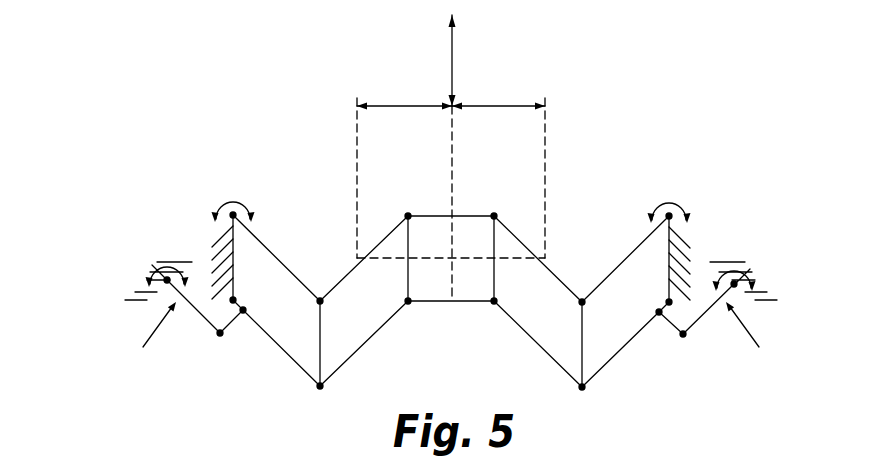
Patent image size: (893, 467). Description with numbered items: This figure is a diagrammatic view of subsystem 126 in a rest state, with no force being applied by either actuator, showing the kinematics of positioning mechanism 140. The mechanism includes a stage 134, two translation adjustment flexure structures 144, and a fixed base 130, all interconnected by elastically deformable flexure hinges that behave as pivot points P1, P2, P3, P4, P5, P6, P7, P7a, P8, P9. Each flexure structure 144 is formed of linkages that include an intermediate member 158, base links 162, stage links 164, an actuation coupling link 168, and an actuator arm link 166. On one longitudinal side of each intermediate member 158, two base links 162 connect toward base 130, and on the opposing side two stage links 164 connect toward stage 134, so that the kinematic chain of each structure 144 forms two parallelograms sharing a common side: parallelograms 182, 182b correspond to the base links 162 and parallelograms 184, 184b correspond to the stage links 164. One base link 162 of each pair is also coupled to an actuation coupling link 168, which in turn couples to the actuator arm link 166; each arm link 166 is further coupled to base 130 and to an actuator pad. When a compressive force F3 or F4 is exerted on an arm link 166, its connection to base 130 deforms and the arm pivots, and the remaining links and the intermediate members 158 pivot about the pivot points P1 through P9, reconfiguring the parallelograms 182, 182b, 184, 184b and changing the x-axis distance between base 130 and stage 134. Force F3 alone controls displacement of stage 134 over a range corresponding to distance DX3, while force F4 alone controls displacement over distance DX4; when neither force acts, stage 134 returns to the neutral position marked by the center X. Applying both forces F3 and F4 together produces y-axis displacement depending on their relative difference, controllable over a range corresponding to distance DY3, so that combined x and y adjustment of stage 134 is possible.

The subsystem 126 is at (648, 142).
The base 130 is at (723, 224).
The stage 134 is at (420, 214).
The positioning mechanism 140 is at (250, 180).
The translation adjustment flexure structure 144 is at (301, 376).
The intermediate member 158 is at (318, 353).
The base link 162 is at (262, 243).
The stage link 164 is at (372, 251).
The actuator arm link 166 is at (203, 318).
The actuation coupling link 168 is at (241, 315).
The parallelogram 182 is at (285, 317).
The lower right diagonal link 182b is at (624, 321).
The parallelogram 184 is at (357, 331).
The lower right inner link 184b is at (529, 314).
The pivot point P1 is at (163, 285).
The pivot point P2 is at (219, 337).
The pivot point P3 is at (244, 317).
The pivot point P4 is at (235, 299).
The pivot point P5 is at (231, 210).
The pivot point P6 is at (321, 390).
The pivot point P7 is at (583, 298).
The pivot point P7a is at (319, 295).
The pivot point P8 is at (408, 305).
The pivot point P9 is at (407, 213).
The center point X is at (415, 260).
The compressive force F3 is at (148, 333).
The compressive force F4 is at (758, 333).
The distance DX3 is at (451, 169).
The distance DX4 is at (498, 169).
The distance DY3 is at (476, 157).